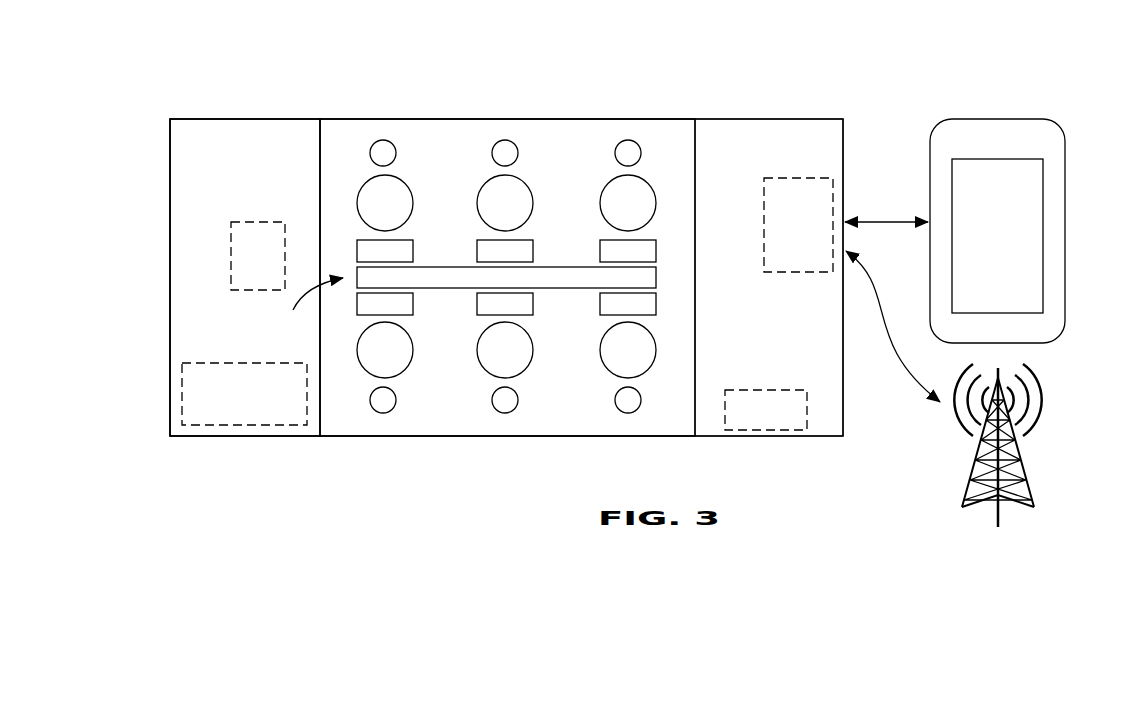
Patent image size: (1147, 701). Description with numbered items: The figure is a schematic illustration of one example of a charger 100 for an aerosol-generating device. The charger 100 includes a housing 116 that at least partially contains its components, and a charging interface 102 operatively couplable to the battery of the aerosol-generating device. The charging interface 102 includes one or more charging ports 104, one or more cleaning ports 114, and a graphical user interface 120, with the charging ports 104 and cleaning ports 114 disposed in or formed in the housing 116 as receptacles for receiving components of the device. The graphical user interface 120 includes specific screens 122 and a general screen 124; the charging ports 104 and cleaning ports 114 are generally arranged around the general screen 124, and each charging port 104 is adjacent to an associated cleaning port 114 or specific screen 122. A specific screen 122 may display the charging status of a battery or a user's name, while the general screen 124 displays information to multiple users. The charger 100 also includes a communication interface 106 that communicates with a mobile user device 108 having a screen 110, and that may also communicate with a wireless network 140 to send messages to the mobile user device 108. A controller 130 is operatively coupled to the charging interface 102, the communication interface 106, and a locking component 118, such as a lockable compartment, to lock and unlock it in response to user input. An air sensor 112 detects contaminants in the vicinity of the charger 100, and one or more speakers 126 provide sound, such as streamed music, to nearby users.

The charger 100 is at (278, 62).
The charging interface 102 is at (330, 440).
The charging ports 104 is at (392, 200).
The communication interface 106 is at (798, 225).
The mobile user device 108 is at (1010, 118).
The screen 110 is at (997, 236).
The air sensor 112 is at (766, 410).
The cleaning ports 114 is at (383, 152).
The housing 116 is at (218, 440).
The locking component 118 is at (244, 394).
The graphical user interface 120 is at (308, 307).
The specific screens 122 is at (365, 252).
The general screen 124 is at (423, 280).
The speakers 126 is at (178, 190).
The controller 130 is at (258, 256).
The wireless network 140 is at (1025, 470).